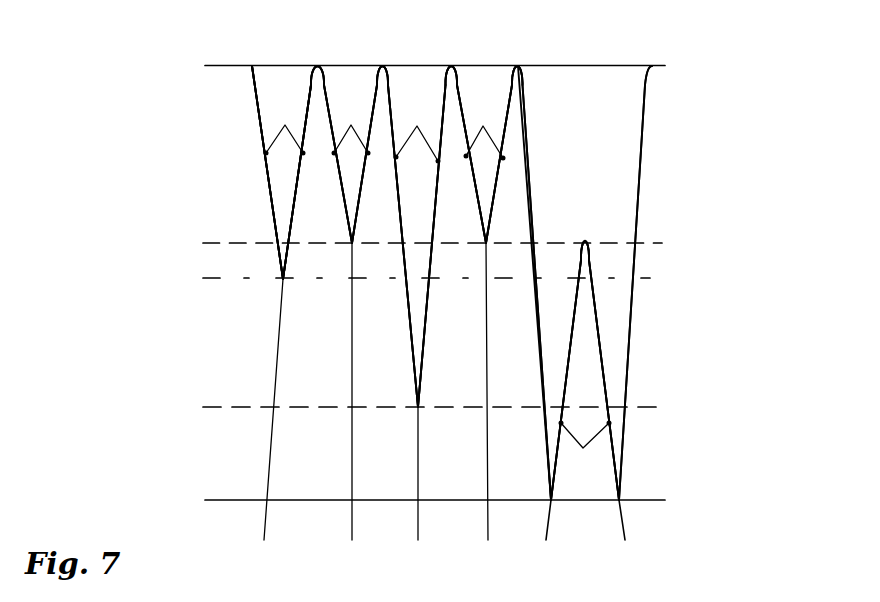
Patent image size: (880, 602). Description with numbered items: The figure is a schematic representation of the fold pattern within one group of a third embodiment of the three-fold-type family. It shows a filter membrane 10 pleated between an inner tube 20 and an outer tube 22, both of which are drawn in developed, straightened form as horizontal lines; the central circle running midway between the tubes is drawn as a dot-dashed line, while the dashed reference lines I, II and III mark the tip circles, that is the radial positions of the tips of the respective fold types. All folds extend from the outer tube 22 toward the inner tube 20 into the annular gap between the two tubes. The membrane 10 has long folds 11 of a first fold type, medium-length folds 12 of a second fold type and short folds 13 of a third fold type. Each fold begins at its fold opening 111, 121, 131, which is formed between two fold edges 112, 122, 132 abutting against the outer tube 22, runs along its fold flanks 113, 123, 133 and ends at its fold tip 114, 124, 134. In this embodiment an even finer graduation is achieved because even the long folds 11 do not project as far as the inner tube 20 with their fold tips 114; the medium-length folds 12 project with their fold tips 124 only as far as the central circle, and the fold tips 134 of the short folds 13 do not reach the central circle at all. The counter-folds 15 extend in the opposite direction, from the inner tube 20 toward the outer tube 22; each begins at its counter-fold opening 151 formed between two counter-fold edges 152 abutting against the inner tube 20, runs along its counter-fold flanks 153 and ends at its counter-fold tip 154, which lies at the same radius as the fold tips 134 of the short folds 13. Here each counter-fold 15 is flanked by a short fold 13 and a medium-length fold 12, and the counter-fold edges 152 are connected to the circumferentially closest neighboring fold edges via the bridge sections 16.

The filter membrane 10 is at (277, 259).
The long fold of a first fold type 11 is at (423, 187).
The medium-length fold of a second fold type 12 is at (283, 229).
The short fold of a third fold type 13 is at (483, 90).
The counter-fold 15 is at (585, 305).
The bridge section 16 is at (629, 351).
The inner tube 20 is at (218, 499).
The outer tube 22 is at (205, 66).
The tip circle of the first fold type I is at (659, 408).
The tip circle of the second fold type II is at (648, 278).
The tip circle of the third fold type III is at (658, 243).
The fold opening of the first fold type 111 is at (422, 78).
The fold edge of the first fold type 112 is at (383, 65).
The fold flank of the first fold type 113 is at (417, 133).
The fold tip of the first fold type 114 is at (421, 488).
The fold opening of the second fold type 121 is at (280, 80).
The fold edge of the second fold type 122 is at (252, 64).
The fold flank of the second fold type 123 is at (285, 129).
The fold tip of the second fold type 124 is at (267, 424).
The fold opening of the third fold type 131 is at (345, 75).
The fold edge of the third fold type 132 is at (317, 65).
The fold flank of the third fold type 133 is at (419, 132).
The fold tip of the third fold type 134 is at (417, 406).
The counter-fold opening 151 is at (583, 490).
The counter-fold edge 152 is at (587, 535).
The counter-fold flank 153 is at (585, 447).
The counter-fold tip 154 is at (585, 241).